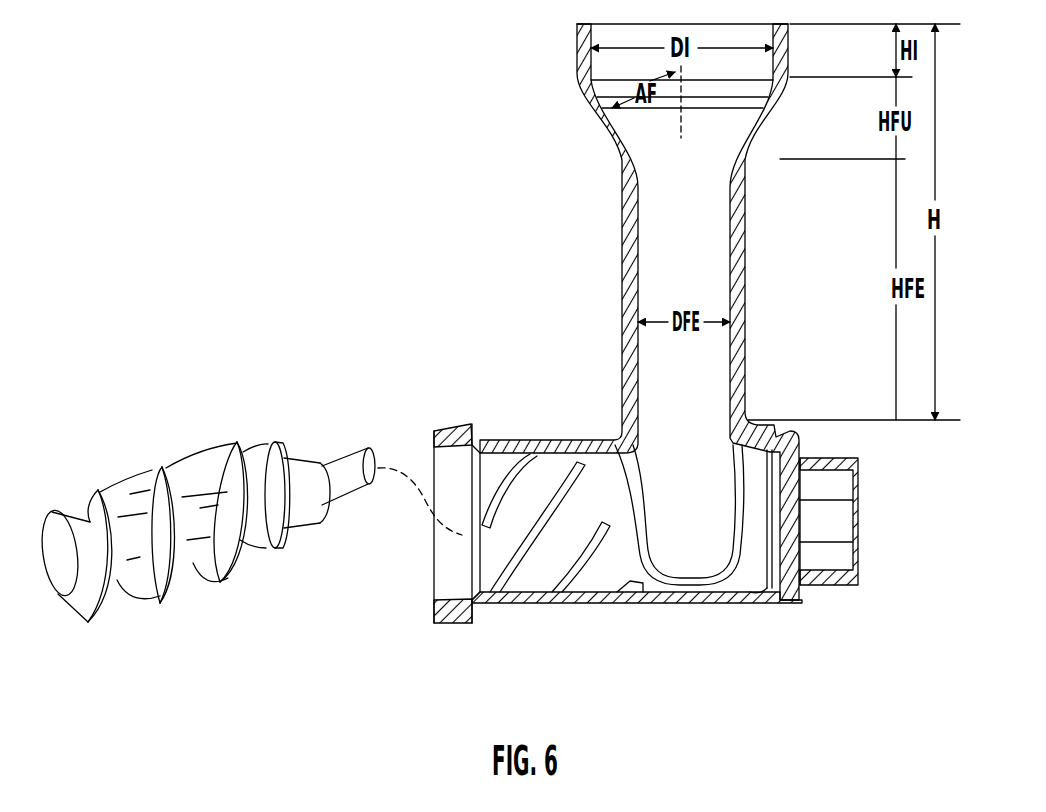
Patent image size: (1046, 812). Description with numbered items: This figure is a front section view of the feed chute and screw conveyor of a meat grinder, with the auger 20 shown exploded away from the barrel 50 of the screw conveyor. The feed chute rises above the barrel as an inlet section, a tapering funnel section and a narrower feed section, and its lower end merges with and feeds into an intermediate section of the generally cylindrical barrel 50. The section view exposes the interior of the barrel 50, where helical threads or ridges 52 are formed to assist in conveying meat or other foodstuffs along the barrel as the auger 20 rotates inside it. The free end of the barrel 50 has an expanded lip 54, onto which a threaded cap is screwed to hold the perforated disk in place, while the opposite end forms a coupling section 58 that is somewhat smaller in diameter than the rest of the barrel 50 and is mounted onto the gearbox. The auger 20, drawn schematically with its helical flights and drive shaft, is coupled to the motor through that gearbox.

The auger 20 is at (153, 582).
The barrel 50 is at (672, 600).
The helical threads or ridges 52 is at (582, 600).
The expanded lip 54 is at (453, 584).
The coupling section 58 is at (848, 560).